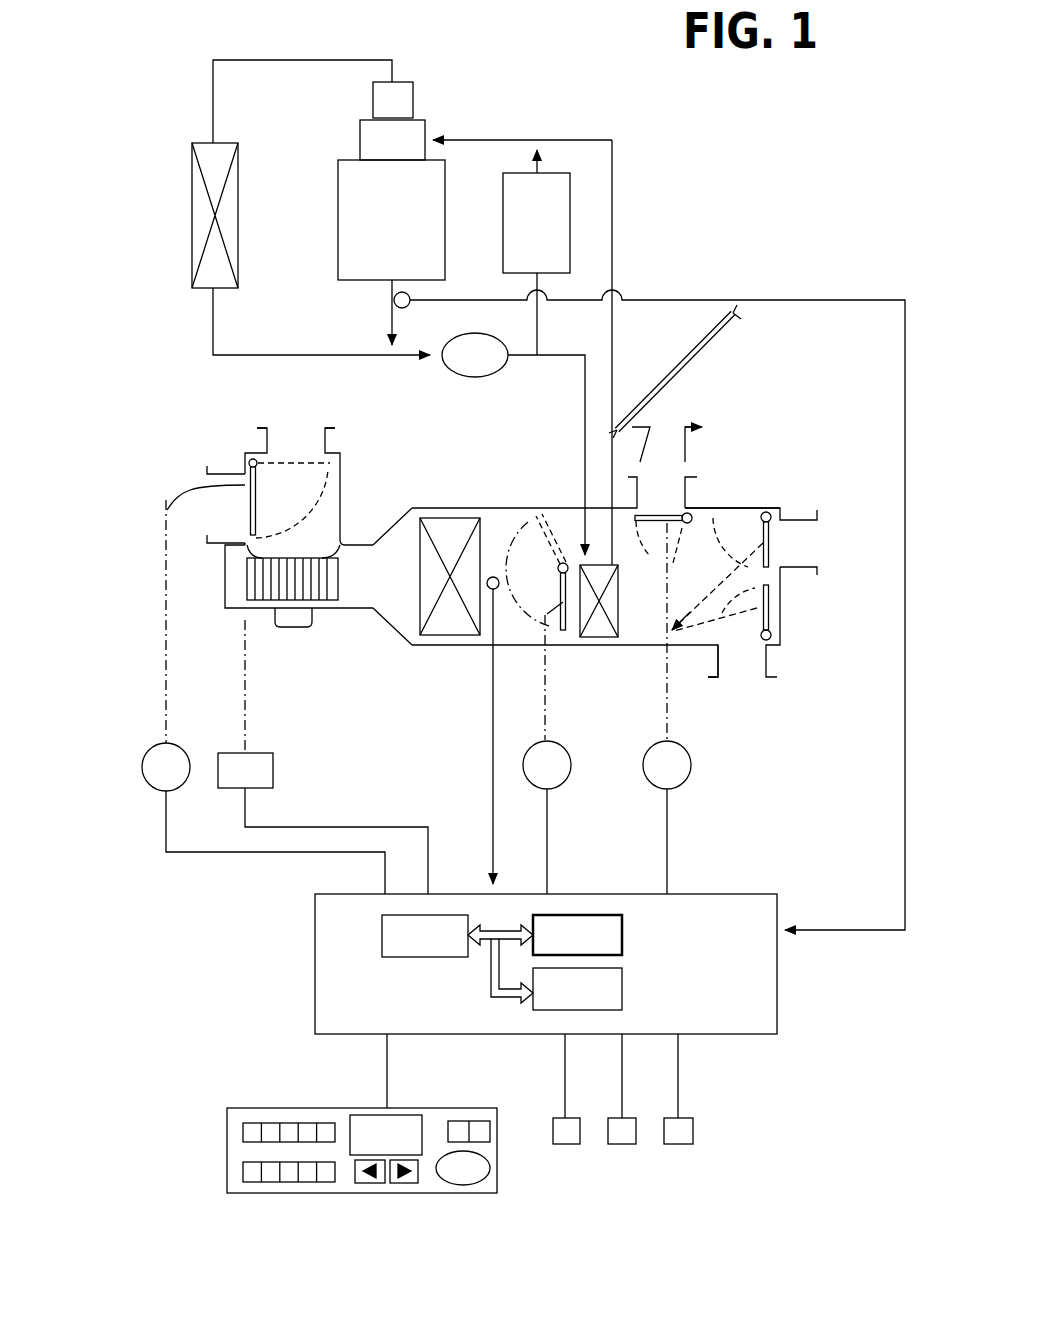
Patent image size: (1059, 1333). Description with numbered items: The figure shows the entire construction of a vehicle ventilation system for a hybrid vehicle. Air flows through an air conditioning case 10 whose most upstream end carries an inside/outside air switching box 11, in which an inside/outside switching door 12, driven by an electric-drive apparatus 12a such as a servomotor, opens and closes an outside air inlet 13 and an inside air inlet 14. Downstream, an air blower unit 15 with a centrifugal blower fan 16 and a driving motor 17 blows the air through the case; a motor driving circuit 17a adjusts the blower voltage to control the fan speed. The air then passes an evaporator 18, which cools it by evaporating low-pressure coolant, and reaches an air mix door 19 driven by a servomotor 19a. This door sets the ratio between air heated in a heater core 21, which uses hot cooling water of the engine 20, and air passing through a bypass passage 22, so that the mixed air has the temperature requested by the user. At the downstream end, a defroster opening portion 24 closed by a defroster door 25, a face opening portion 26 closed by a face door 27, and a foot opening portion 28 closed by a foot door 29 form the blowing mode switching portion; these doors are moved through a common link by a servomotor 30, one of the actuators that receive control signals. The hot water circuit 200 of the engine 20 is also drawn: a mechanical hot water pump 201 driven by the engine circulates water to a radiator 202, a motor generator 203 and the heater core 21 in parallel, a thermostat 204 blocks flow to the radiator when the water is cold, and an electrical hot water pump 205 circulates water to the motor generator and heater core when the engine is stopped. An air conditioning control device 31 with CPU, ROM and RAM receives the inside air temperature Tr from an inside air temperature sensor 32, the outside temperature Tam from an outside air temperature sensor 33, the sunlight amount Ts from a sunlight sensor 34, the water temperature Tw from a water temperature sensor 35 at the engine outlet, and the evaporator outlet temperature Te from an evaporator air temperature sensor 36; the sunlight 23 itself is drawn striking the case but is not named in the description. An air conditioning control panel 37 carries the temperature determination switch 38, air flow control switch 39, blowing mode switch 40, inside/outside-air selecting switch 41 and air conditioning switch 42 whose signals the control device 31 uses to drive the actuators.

The air conditioning case 10 is at (458, 496).
The inside/outside air switching box 11 is at (342, 465).
The inside/outside switching door 12 is at (258, 500).
The electric-drive apparatus 12a is at (190, 783).
The outside air inlet 13 is at (292, 442).
The inside air inlet 14 is at (212, 505).
The air blower unit 15 is at (108, 582).
The centrifugal blower fan 16 is at (265, 584).
The driving motor 17 is at (285, 619).
The motor driving circuit 17a is at (273, 768).
The evaporator 18 is at (437, 520).
The air mix door 19 is at (538, 550).
The servomotor 19a is at (566, 782).
The engine 20 is at (338, 252).
The heater core 21 is at (600, 637).
The bypass passage 22 is at (568, 530).
The solar radiation 23 is at (663, 378).
The defroster opening portion 24 is at (652, 493).
The defroster door 25 is at (653, 515).
The face opening portion 26 is at (785, 545).
The face door 27 is at (764, 545).
The foot opening portion 28 is at (738, 665).
The foot door 29 is at (771, 606).
The servomotor 30 is at (686, 782).
The air conditioning control device 31 is at (777, 995).
The inside air temperature sensor 32 is at (565, 1144).
The outside air temperature sensor 33 is at (622, 1144).
The sunlight sensor 34 is at (678, 1144).
The water temperature sensor 35 is at (404, 308).
The evaporator air temperature sensor 36 is at (490, 576).
The air conditioning control panel 37 is at (425, 1193).
The temperature determination switch 38 is at (372, 1115).
The air flow control switch 39 is at (288, 1183).
The blowing mode switch 40 is at (287, 1120).
The inside/outside-air selecting switch 41 is at (477, 1120).
The air conditioning switch 42 is at (483, 1183).
The hot water circuit 200 is at (484, 128).
The mechanical hot water pump 201 is at (360, 142).
The radiator 202 is at (192, 231).
The motor generator 203 is at (570, 245).
The thermostat 204 is at (372, 100).
The electrical hot water pump 205 is at (470, 377).